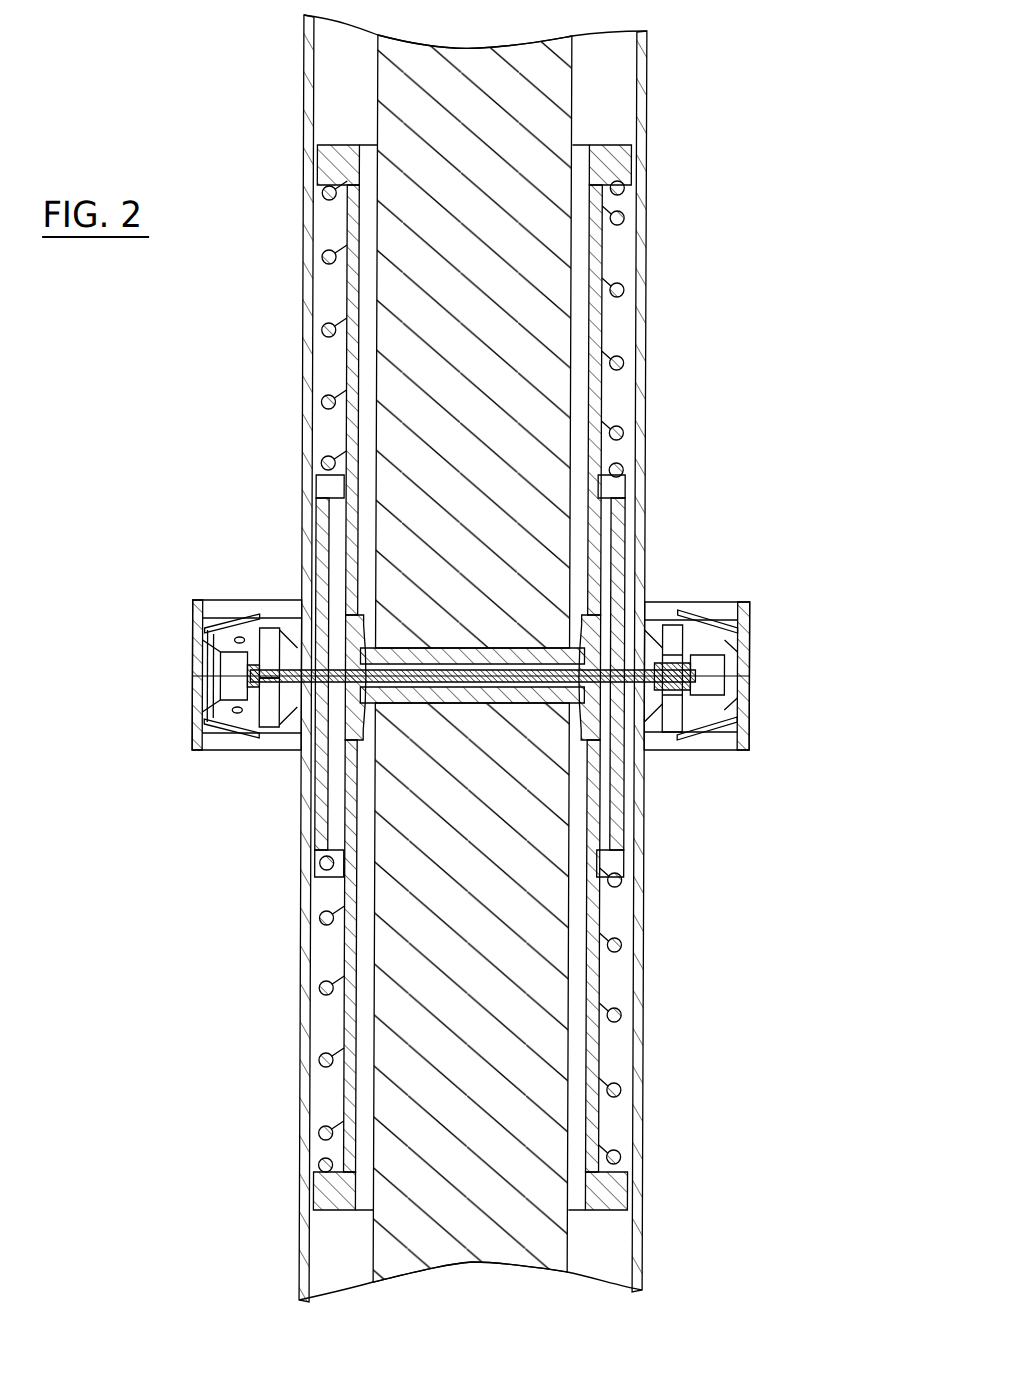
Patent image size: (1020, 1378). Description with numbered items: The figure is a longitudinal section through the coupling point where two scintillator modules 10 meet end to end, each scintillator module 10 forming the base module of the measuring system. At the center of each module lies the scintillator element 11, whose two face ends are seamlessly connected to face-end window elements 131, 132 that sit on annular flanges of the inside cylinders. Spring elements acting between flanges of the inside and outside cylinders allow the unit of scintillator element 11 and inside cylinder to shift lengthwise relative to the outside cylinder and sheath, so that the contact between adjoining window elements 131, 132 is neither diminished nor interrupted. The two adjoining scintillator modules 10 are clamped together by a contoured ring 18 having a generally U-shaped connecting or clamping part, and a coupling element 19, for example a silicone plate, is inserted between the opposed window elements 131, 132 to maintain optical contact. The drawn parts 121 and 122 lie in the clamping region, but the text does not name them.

The scintillator module 10 is at (662, 397).
The scintillator element 11 is at (496, 437).
The contoured ring 18 is at (742, 676).
The coupling element 19 is at (350, 738).
The lower bracket 121 is at (195, 743).
The upper bracket 122 is at (243, 633).
The window element 131 is at (510, 697).
The window element 132 is at (510, 658).